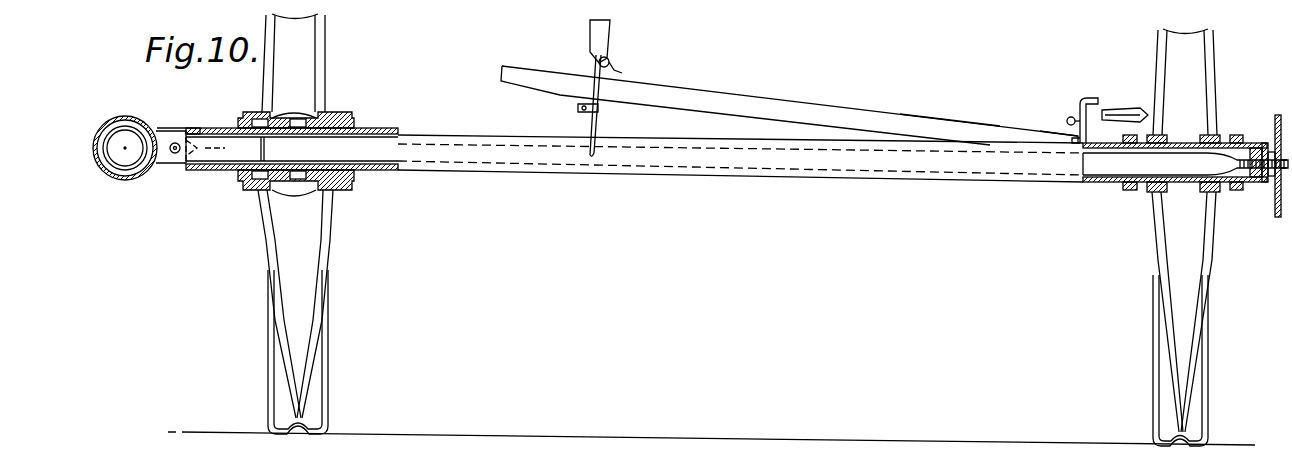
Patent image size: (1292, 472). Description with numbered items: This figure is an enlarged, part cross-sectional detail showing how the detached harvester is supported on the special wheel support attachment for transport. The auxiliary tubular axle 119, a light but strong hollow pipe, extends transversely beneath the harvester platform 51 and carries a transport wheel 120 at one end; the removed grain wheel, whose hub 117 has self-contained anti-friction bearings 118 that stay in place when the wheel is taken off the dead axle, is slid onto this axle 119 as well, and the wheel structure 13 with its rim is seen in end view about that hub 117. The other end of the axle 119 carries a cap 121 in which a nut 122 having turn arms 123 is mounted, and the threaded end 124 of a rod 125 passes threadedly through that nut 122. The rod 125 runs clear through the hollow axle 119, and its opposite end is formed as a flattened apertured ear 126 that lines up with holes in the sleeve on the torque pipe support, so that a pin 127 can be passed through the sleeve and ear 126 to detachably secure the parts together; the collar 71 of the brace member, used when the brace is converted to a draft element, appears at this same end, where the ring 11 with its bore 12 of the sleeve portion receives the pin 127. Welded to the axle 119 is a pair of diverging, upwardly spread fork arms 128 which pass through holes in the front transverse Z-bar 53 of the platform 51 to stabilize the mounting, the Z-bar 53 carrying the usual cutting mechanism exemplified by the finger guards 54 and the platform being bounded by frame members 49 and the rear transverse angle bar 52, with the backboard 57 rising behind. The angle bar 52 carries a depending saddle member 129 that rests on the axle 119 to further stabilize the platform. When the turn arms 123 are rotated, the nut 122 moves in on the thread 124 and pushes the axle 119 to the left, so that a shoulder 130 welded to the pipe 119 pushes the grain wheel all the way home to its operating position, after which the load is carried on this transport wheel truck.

The eye ring 11 is at (130, 117).
The ring bore 12 is at (127, 172).
The left standard 13 is at (348, 388).
The frame members 49 is at (797, 102).
The harvester platform 51 is at (938, 117).
The rear transverse angle bar 52 is at (613, 72).
The front transverse Z-bar 53 is at (1060, 133).
The finger guards 54 is at (1129, 116).
The backboard 57 is at (594, 39).
The collar 71 is at (203, 129).
The hub 117 is at (302, 116).
The anti-friction bearings 118 is at (320, 192).
The tubular axle 119 is at (855, 179).
The transport wheel 120 is at (1227, 432).
The cap 121 is at (1264, 140).
The nut 122 is at (1274, 199).
The turn arms 123 is at (1271, 114).
The threaded end 124 is at (1250, 178).
The rod 125 is at (1097, 166).
The flattened apertured ear 126 is at (172, 163).
The pin 127 is at (180, 145).
The fork arms 128 is at (1114, 152).
The saddle member 129 is at (592, 124).
The shoulder 130 is at (364, 129).